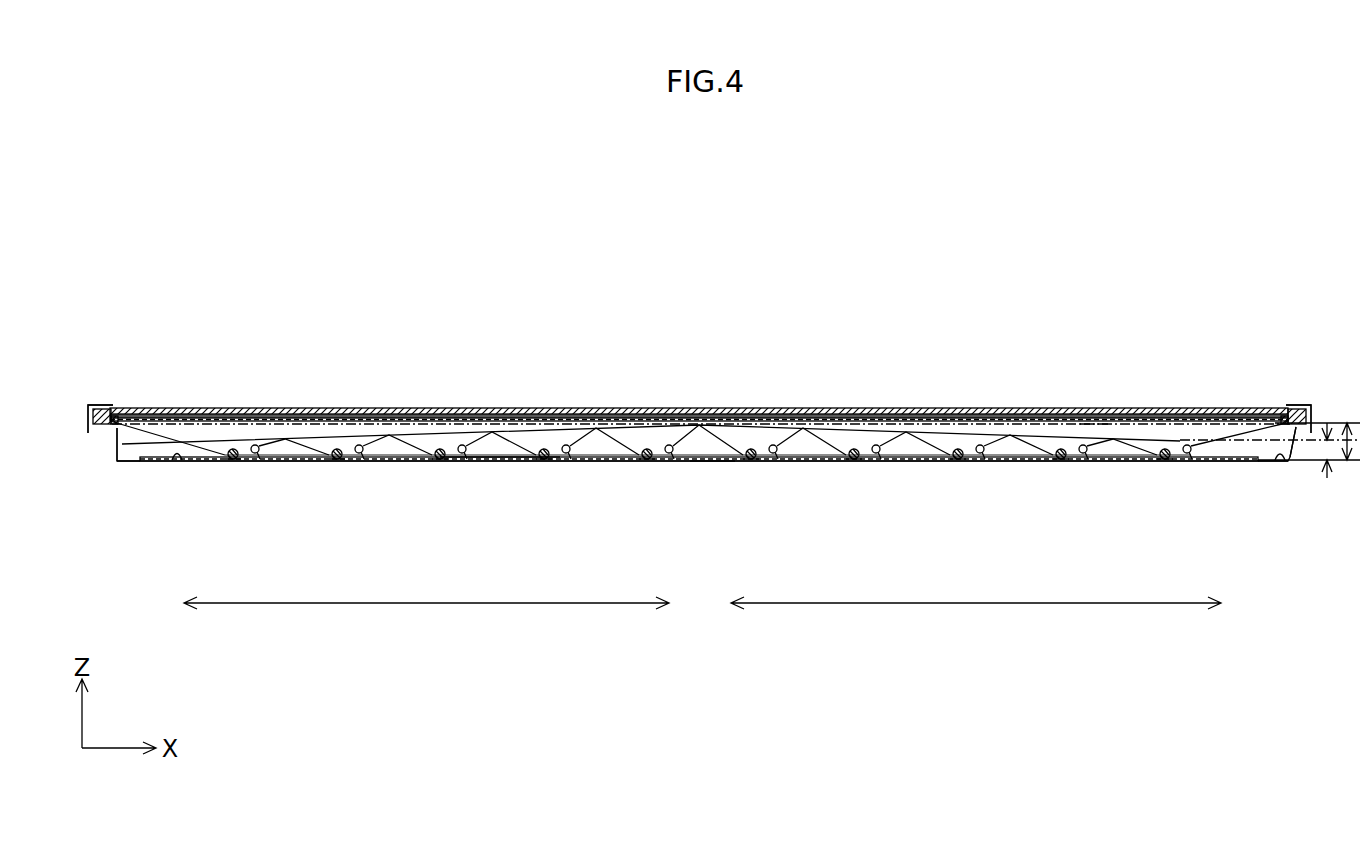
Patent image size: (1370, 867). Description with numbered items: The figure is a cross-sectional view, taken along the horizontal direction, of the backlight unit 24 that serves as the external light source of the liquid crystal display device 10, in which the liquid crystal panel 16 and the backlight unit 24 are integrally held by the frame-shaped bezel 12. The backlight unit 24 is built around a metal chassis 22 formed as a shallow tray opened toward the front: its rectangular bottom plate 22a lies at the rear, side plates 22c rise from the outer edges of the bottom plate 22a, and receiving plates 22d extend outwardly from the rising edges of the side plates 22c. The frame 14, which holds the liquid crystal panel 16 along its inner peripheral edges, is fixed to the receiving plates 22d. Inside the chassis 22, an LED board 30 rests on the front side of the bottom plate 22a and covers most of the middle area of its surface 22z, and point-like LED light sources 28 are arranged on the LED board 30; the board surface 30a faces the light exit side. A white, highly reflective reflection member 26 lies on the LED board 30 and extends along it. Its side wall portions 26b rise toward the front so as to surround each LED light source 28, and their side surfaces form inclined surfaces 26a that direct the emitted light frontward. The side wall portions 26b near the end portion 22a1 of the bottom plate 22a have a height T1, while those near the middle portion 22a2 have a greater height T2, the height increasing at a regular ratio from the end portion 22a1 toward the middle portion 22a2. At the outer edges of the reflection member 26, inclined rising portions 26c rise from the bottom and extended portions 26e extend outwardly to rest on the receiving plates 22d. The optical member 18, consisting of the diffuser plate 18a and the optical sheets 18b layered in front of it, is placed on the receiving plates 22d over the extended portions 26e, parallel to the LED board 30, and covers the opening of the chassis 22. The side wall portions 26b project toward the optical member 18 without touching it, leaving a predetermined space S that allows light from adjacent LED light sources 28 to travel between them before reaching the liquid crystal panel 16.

The liquid crystal display device 10 is at (888, 248).
The bezel 12 is at (106, 408).
The frame 14 is at (89, 404).
The liquid crystal panel 16 is at (582, 408).
The optical member 18 is at (885, 341).
The diffuser plate 18a is at (794, 414).
The optical sheets 18b is at (840, 418).
The chassis 22 is at (117, 443).
The bottom plate 22a is at (192, 462).
The end portion 22a1 is at (701, 621).
The middle portion 22a2 is at (922, 621).
The side plates 22c is at (121, 463).
The receiving plates 22d is at (116, 433).
The surface 22z is at (178, 462).
The backlight unit 24 is at (720, 520).
The reflection member 26 is at (1250, 437).
The inclined surfaces 26a is at (243, 461).
The side wall portions 26b is at (262, 454).
The rising portions 26c is at (150, 436).
The extended portions 26e is at (116, 420).
The LED light sources 28 is at (232, 448).
The LED board 30 is at (470, 462).
The LED board mounting surface 30a is at (518, 461).
The space S is at (1099, 424).
The height T1 is at (1329, 458).
The height T2 is at (1349, 428).